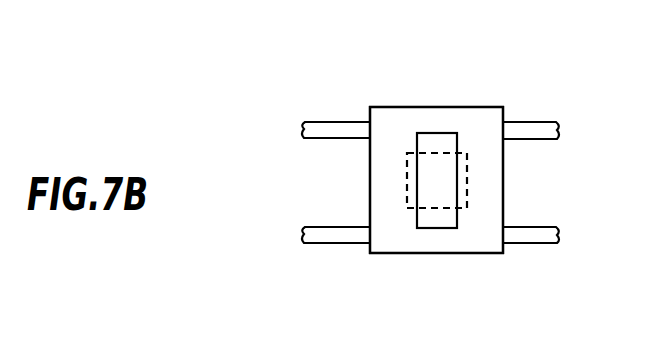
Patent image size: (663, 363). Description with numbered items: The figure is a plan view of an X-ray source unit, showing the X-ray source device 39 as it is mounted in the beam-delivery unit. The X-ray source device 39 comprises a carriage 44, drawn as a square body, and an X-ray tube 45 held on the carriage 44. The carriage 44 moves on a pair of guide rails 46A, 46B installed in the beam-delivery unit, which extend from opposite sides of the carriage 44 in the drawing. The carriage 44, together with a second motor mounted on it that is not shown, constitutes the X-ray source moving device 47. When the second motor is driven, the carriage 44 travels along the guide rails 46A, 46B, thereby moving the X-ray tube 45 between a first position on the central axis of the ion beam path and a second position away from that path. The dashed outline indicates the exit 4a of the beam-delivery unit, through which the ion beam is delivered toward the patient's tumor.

The X-ray source device 39 is at (423, 98).
The carriage 44 is at (487, 107).
The X-ray tube 45 is at (436, 228).
The exit 4a is at (467, 190).
The guide rail 46A is at (333, 122).
The guide rail 46B is at (330, 243).
The X-ray source moving device 47 is at (485, 257).